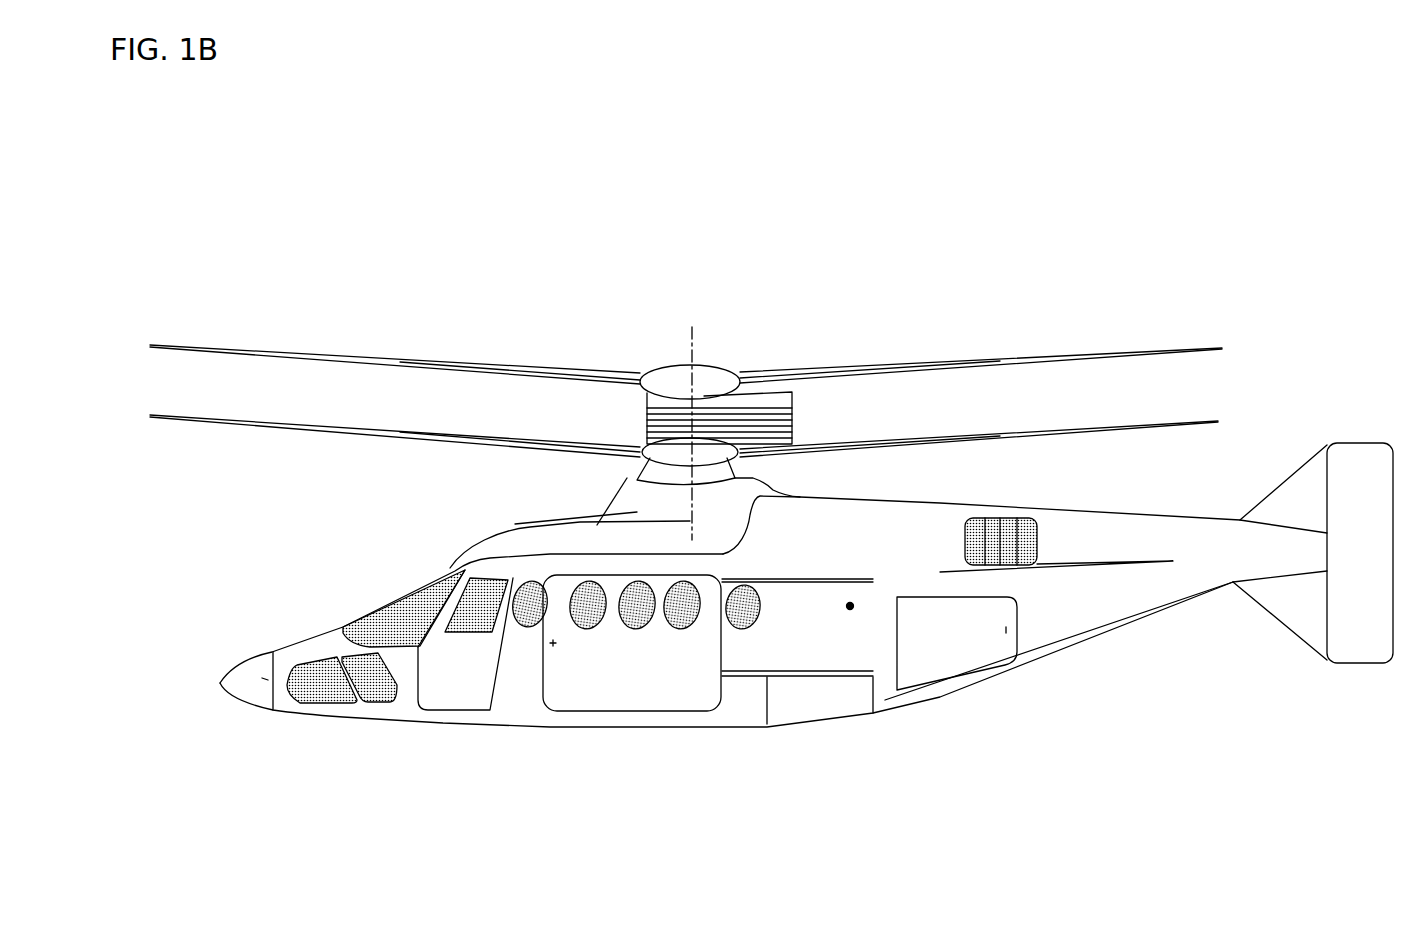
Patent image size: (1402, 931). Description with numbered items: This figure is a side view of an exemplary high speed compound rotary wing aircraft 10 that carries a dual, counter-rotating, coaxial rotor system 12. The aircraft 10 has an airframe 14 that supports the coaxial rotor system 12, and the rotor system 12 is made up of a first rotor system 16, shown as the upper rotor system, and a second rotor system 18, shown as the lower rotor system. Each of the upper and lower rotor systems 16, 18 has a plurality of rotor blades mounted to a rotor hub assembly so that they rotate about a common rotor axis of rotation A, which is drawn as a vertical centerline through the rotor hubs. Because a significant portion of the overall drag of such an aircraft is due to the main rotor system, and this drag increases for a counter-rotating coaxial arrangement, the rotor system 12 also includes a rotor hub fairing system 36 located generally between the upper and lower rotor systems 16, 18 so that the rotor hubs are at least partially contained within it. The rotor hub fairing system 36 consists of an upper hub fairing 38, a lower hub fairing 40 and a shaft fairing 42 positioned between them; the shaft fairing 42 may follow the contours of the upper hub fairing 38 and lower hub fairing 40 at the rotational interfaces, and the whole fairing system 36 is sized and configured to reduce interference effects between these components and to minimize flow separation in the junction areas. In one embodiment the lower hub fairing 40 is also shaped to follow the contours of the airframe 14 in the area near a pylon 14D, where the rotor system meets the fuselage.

The high speed compound rotary wing aircraft 10 is at (860, 324).
The rotor axis of rotation A is at (695, 347).
The dual, counter-rotating, coaxial rotor system 12 is at (727, 369).
The airframe 14 is at (506, 551).
The pylon 14D is at (515, 524).
The first rotor system 16 is at (757, 373).
The second rotor system 18 is at (624, 479).
The rotor hub fairing system 36 is at (593, 408).
The upper hub fairing 38 is at (643, 371).
The lower hub fairing 40 is at (652, 445).
The shaft fairing 42 is at (748, 427).